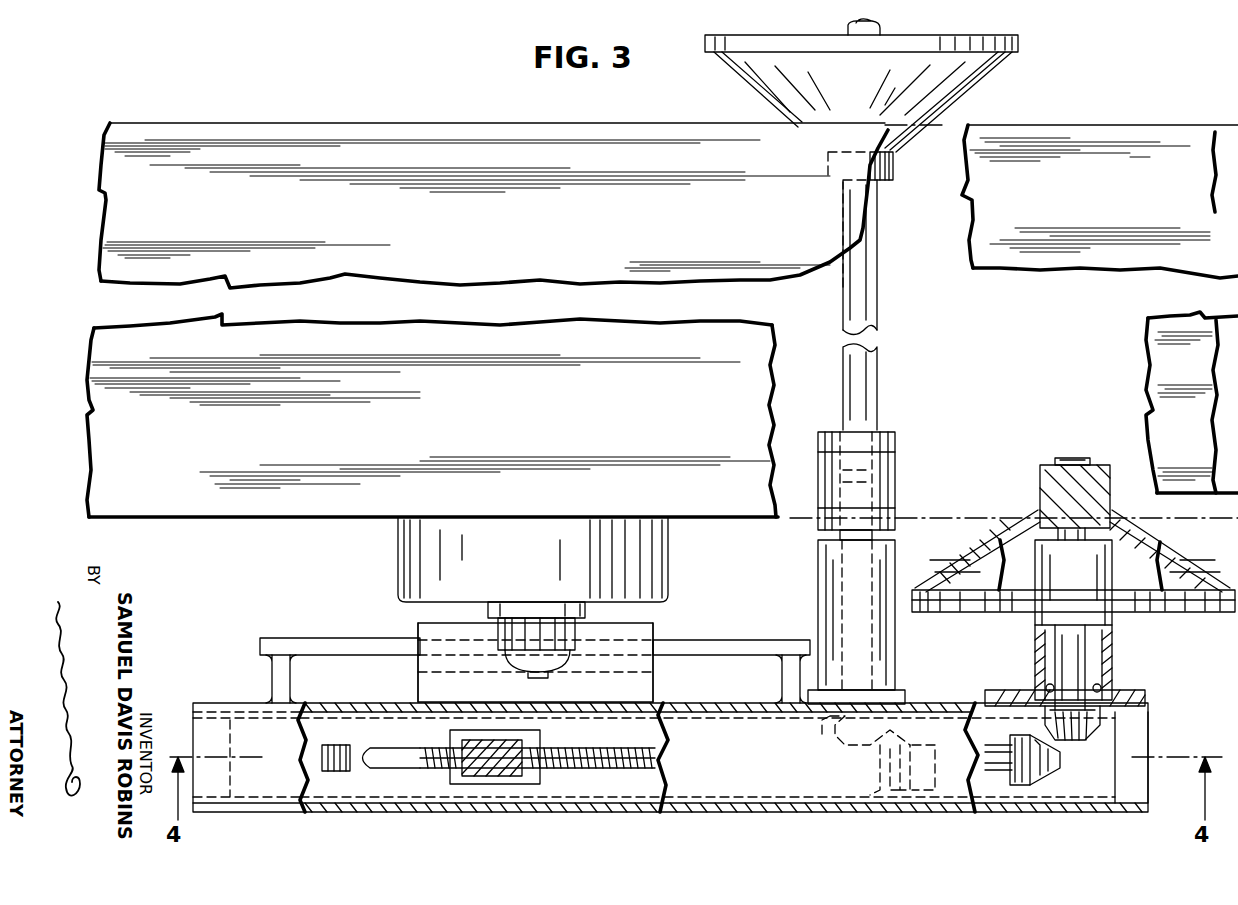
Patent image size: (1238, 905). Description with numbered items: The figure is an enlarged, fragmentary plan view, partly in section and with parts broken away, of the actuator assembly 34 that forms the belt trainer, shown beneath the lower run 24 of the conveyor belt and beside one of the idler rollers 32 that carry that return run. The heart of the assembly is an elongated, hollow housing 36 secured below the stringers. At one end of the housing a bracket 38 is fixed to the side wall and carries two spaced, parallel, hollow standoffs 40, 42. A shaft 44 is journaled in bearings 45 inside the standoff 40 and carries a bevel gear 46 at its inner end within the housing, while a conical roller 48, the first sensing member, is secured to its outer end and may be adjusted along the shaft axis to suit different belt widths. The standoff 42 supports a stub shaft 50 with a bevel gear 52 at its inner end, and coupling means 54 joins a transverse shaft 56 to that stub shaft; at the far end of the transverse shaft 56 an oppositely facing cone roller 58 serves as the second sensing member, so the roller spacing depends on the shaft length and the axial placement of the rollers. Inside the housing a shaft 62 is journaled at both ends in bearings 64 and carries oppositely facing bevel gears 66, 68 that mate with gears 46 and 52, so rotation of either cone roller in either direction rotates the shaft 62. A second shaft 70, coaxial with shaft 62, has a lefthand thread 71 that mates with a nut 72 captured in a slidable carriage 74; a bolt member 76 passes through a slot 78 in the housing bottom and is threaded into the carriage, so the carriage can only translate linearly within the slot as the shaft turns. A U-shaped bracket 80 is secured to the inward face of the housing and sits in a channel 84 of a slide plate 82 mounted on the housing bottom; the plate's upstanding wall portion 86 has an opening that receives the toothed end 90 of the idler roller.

The lower run 24 is at (145, 132).
The idler roller 32 is at (648, 573).
The drive assembly 34 is at (335, 612).
The housing 36 is at (697, 806).
The bracket 38 is at (1147, 698).
The standoff 40 is at (1108, 636).
The standoff 42 is at (888, 648).
The shaft 44 is at (1080, 656).
The bearings 45 is at (1100, 684).
The bevel gear 46 is at (1100, 733).
The conical roller 48 is at (1035, 508).
The stub shaft 50 is at (874, 536).
The bevel gear 52 is at (880, 725).
The coupling means 54 is at (897, 474).
The transverse shaft 56 is at (878, 395).
The cone roller 58 is at (965, 70).
The shaft 62 is at (993, 748).
The bearings 64 is at (1135, 790).
The bevel gear 66 is at (1040, 775).
The bevel gear 68 is at (870, 795).
The second shaft 70 is at (600, 748).
The lefthand thread 71 is at (345, 748).
The nut 72 is at (525, 782).
The carriage 74 is at (460, 790).
The bolt member 76 is at (540, 748).
The slot 78 is at (384, 752).
The U-shaped bracket 80 is at (284, 682).
The slide plate 82 is at (645, 688).
The channel 84 is at (653, 632).
The upstanding wall portion 86 is at (426, 632).
The toothed end 90 is at (505, 635).